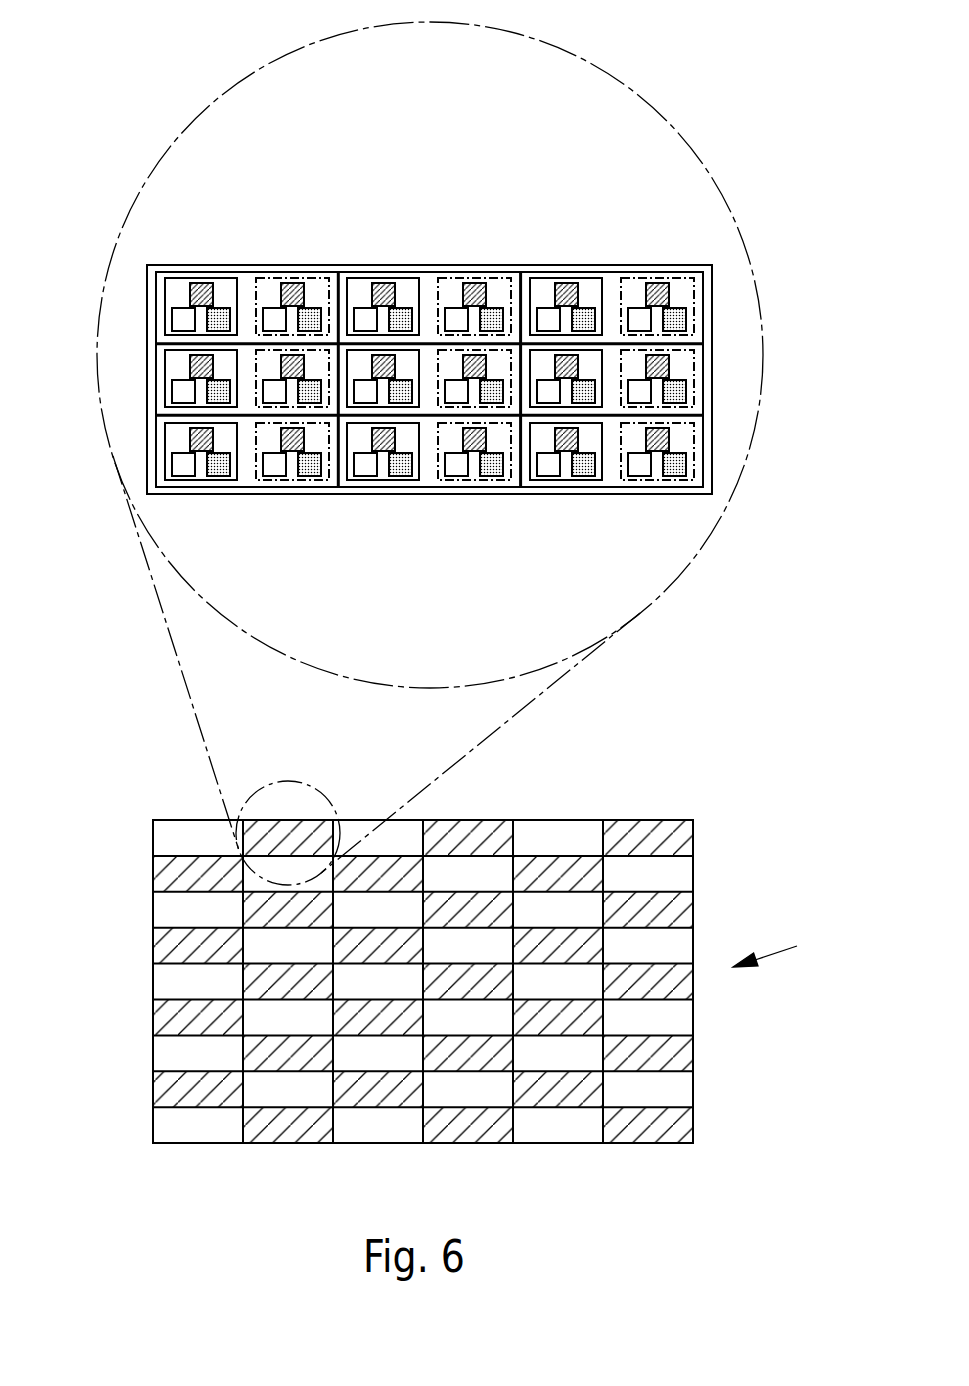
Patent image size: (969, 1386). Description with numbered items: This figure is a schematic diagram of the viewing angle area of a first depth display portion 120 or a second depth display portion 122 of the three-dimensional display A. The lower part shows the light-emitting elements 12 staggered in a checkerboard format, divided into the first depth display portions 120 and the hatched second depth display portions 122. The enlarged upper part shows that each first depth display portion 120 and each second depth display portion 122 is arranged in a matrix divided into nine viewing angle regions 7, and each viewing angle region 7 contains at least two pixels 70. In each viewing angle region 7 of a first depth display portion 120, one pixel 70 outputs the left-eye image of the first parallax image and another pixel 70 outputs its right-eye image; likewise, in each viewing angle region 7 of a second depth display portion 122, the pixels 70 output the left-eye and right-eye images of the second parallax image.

The viewing angle region 7 is at (156, 305).
The pixel 70 is at (221, 279).
The light-emitting element 12 is at (382, 283).
The first depth display portion 120 is at (158, 828).
The second depth display portion 122 is at (313, 832).
The three-dimensional display A is at (775, 947).